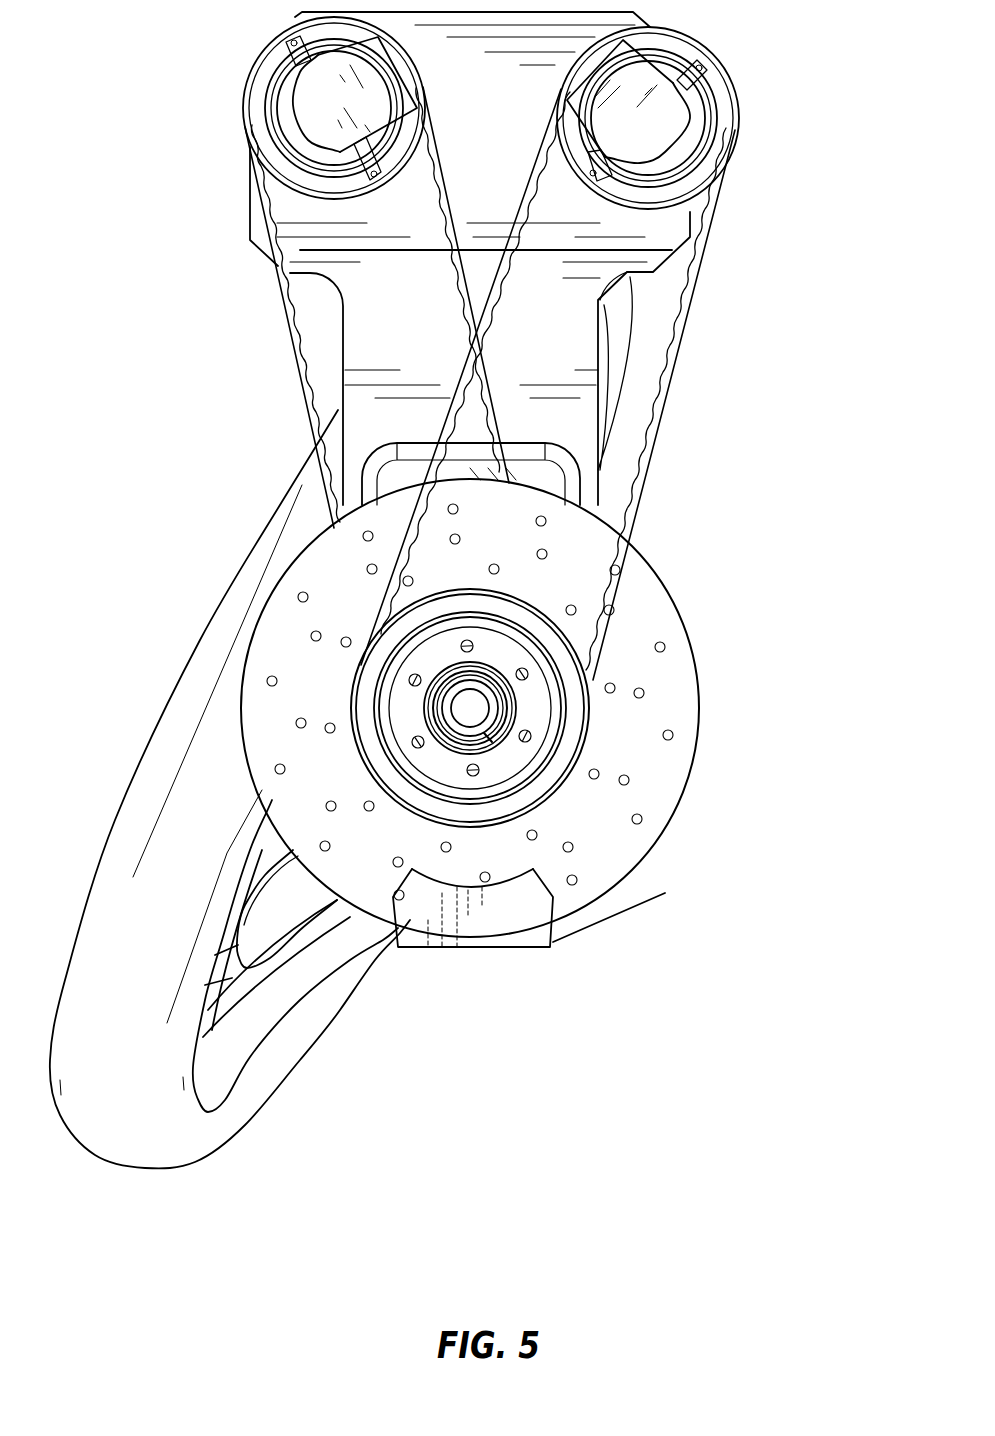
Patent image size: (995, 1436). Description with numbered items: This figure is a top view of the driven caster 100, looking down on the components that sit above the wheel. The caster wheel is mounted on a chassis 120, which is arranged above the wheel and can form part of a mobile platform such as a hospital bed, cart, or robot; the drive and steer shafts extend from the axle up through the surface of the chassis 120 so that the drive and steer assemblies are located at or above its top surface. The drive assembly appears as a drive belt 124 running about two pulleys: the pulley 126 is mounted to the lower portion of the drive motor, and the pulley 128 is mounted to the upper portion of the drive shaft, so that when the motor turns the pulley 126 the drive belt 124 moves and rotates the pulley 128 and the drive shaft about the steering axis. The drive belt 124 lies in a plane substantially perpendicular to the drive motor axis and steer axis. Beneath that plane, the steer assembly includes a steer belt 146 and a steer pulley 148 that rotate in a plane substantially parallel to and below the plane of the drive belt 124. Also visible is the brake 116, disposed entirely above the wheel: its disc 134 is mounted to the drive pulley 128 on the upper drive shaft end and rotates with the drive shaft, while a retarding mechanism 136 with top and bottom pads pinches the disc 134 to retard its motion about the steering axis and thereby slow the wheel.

The driven caster 100 is at (785, 240).
The brake 116 is at (622, 903).
The chassis 120 is at (257, 220).
The drive belt 124 is at (637, 505).
The pulley 126 is at (736, 97).
The pulley 128 is at (583, 753).
The disc 134 is at (675, 725).
The retarding mechanism 136 is at (518, 926).
The steer belt 146 is at (290, 338).
The steer pulley 148 is at (247, 105).